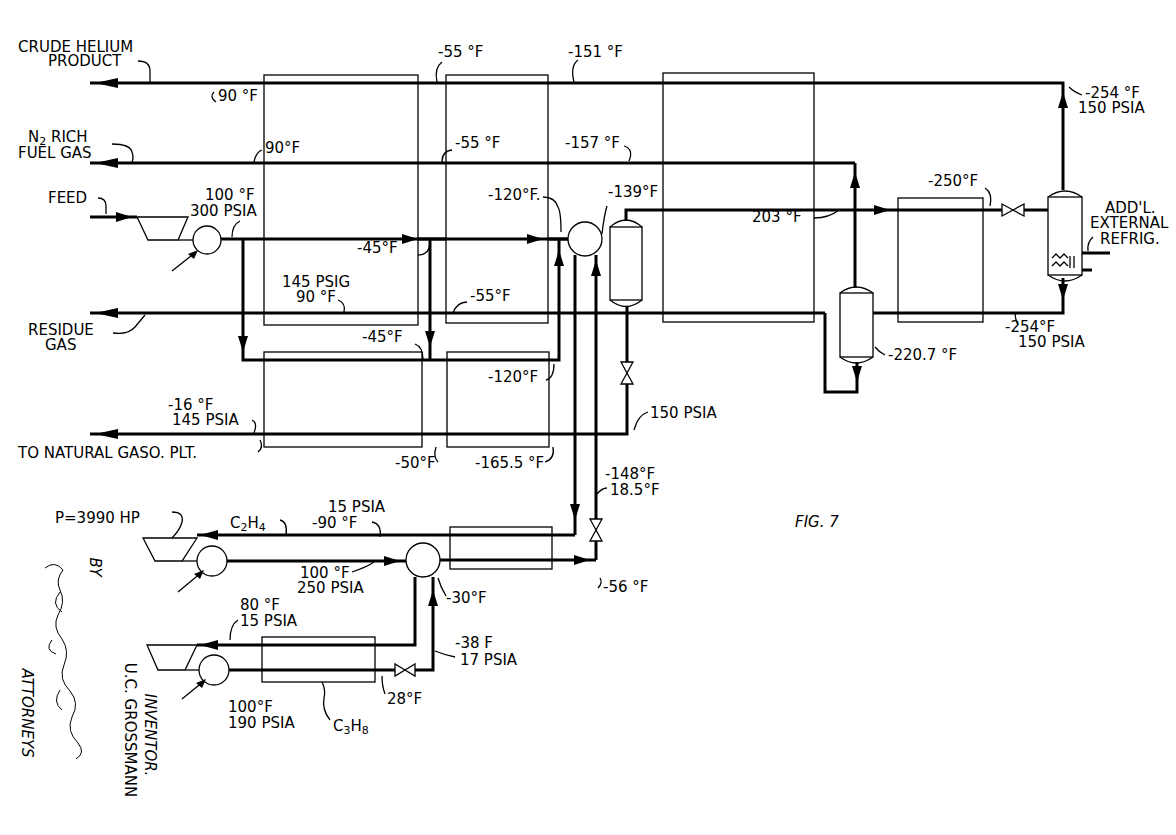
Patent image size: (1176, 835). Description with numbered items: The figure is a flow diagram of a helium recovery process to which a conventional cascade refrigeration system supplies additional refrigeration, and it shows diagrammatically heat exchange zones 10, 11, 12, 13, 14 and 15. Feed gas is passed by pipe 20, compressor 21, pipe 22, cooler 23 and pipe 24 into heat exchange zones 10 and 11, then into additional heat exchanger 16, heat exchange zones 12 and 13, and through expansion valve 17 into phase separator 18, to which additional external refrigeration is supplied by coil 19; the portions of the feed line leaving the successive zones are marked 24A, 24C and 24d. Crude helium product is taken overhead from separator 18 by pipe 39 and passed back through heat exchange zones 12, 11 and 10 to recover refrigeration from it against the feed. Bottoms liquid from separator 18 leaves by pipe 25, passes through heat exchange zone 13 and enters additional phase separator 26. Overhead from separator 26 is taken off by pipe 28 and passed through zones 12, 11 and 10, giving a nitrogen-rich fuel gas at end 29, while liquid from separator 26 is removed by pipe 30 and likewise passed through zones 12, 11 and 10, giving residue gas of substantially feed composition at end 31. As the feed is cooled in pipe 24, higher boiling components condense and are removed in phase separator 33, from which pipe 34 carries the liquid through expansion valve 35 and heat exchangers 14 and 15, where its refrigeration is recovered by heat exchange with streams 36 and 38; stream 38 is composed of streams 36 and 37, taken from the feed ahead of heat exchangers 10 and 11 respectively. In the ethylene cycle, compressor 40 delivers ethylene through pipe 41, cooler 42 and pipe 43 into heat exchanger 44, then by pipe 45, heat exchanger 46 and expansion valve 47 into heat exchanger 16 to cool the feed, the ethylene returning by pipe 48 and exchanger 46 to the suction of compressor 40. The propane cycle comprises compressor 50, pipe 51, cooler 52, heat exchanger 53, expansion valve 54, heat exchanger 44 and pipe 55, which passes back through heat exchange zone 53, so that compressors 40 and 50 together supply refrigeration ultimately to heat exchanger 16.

The heat exchange zone 10 is at (380, 96).
The heat exchange zone 11 is at (509, 93).
The heat exchange zone 12 is at (770, 100).
The heat exchange zone 13 is at (938, 283).
The heat exchanger 14 is at (512, 410).
The heat exchanger 15 is at (354, 410).
The additional heat exchanger 16 is at (593, 222).
The expansion valve 17 is at (1009, 204).
The phase separator 18 is at (1081, 198).
The coil 19 is at (1091, 270).
The pipe 20 is at (67, 220).
The compressor 21 is at (148, 239).
The pipe 22 is at (182, 244).
The cooler 23 is at (178, 263).
The pipe 24 is at (234, 244).
The feed line after exchanger 10 24A is at (344, 240).
The feed line after exchanger 11 24C is at (535, 231).
The overhead vapor line 24d is at (673, 210).
The pipe 25 is at (1068, 305).
The additional phase separator 26 is at (873, 324).
The pipe 28 is at (864, 170).
The end of pipe 28 29 is at (241, 168).
The pipe 30 is at (821, 393).
The end of pipe 30 31 is at (193, 314).
The phase separator 33 is at (642, 232).
The pipe 34 is at (628, 346).
The expansion valve 35 is at (633, 375).
The stream 36 is at (239, 356).
The stream 37 is at (432, 268).
The stream 38 is at (556, 349).
The pipe 39 is at (237, 84).
The compressor 40 is at (149, 563).
The pipe 41 is at (190, 571).
The cooler 42 is at (218, 564).
The pipe 43 is at (293, 559).
The heat exchanger 44 is at (408, 578).
The pipe 45 is at (450, 530).
The heat exchanger 46 is at (550, 570).
The expansion valve 47 is at (604, 526).
The pipe 48 is at (574, 477).
The compressor 50 is at (150, 645).
The pipe 51 is at (190, 684).
The cooler 52 is at (218, 684).
The heat exchanger 53 is at (360, 668).
The expansion valve 54 is at (411, 676).
The pipe 55 is at (406, 644).